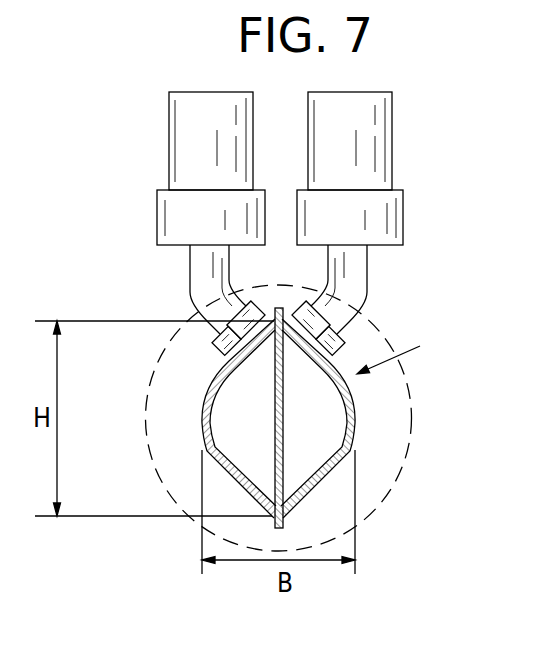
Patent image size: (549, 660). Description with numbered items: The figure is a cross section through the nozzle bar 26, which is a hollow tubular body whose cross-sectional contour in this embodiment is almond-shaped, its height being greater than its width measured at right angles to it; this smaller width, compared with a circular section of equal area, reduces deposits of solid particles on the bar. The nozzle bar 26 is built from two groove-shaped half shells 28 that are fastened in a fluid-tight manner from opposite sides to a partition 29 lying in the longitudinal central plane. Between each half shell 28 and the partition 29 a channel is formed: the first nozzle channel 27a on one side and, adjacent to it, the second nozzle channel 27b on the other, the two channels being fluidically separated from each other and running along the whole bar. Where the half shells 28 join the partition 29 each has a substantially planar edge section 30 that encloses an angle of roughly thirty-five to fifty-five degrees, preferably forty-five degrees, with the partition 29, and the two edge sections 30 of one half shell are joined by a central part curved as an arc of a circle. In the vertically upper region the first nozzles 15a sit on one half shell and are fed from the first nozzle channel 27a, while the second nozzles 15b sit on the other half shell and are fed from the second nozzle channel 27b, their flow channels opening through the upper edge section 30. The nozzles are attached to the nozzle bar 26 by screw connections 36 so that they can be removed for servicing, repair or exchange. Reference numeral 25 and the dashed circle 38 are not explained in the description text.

The first nozzles 15a is at (386, 134).
The second nozzles 15b is at (178, 138).
The screw connections 36 is at (302, 275).
The partition 29 is at (283, 467).
The edge section 30 is at (260, 348).
The half shells 28 is at (208, 385).
The guide vane 25 is at (273, 418).
The first nozzle channel 27a is at (330, 428).
The second nozzle channel 27b is at (220, 428).
The nozzle bar 26 is at (402, 350).
The envelope circle 38 is at (402, 370).